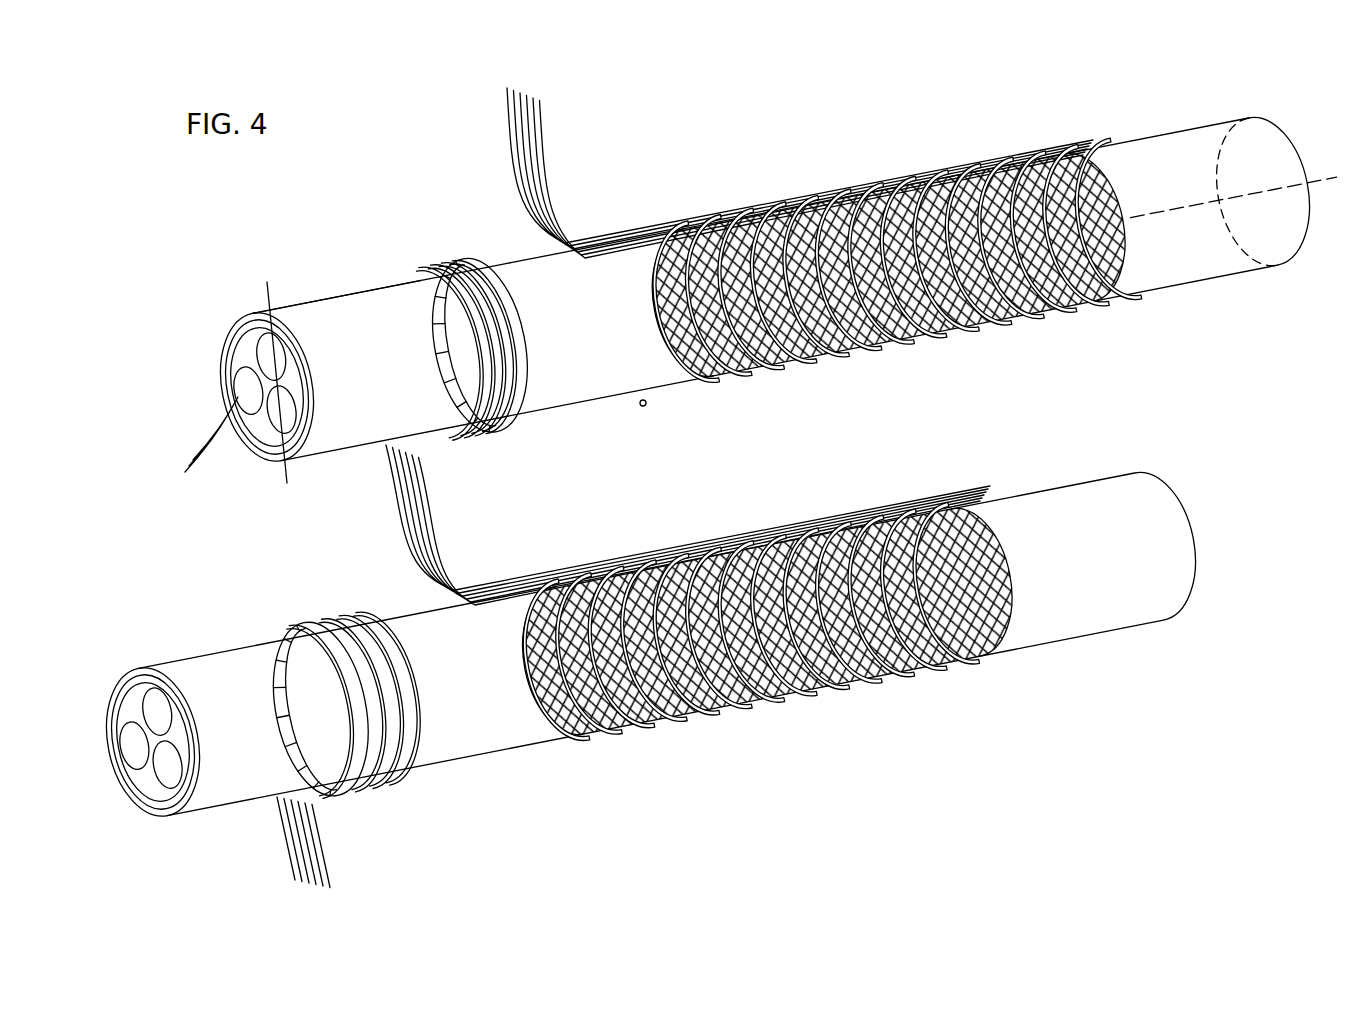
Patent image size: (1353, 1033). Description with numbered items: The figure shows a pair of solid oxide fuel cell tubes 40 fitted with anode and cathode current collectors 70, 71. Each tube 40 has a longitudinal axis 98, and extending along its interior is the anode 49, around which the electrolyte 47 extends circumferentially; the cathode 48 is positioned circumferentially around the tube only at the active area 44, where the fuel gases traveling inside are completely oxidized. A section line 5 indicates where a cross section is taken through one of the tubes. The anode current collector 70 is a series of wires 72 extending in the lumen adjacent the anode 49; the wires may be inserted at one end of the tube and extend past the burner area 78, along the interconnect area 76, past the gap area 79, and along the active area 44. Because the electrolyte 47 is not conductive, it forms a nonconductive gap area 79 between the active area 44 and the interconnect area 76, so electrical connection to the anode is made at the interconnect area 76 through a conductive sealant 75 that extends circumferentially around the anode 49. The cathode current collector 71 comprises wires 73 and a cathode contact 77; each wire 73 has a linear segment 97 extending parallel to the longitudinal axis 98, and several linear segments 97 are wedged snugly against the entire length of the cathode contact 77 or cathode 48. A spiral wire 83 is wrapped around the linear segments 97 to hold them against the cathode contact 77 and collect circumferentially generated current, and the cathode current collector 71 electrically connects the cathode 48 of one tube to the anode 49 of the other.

The tube 40 is at (490, 150).
The active area 44 is at (886, 148).
The electrolyte 47 is at (238, 322).
The cathode 48 is at (633, 401).
The anode 49 is at (232, 342).
The section line 5- 5 is at (300, 282).
The anode current collector 70 is at (207, 385).
The cathode current collector 71 is at (668, 212).
The wires 72 is at (192, 441).
The wire 73 is at (563, 150).
The conductive sealant 75 is at (375, 285).
The interconnect area 76 is at (405, 250).
The cathode contact 77 is at (688, 401).
The burner area 78 is at (313, 287).
The gap area 79 is at (510, 243).
The spiral wire 83 is at (1018, 150).
The linear segment 97 is at (842, 195).
The longitudinal axis 98 is at (1312, 172).